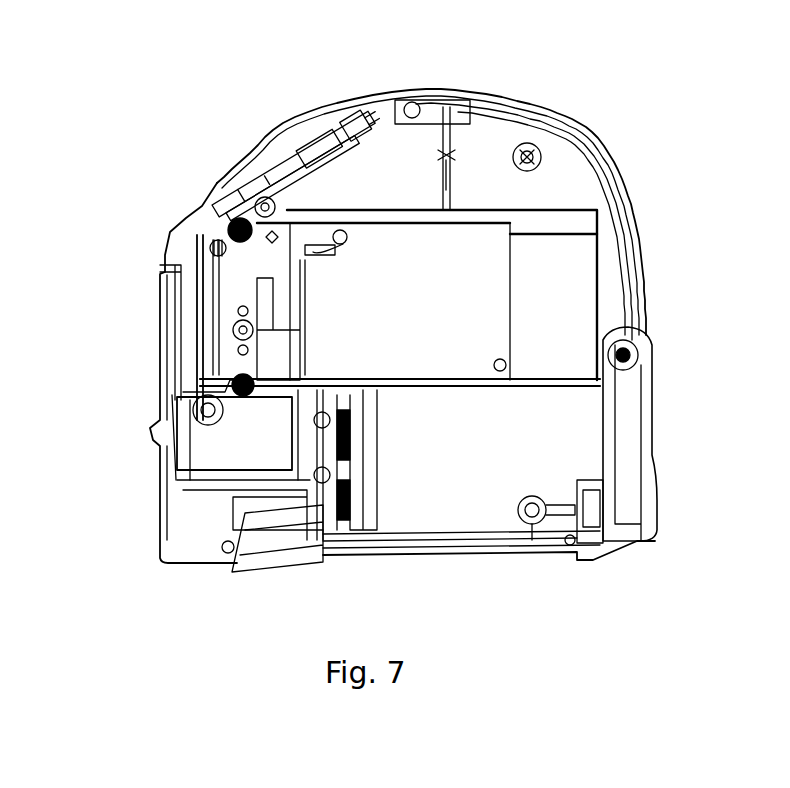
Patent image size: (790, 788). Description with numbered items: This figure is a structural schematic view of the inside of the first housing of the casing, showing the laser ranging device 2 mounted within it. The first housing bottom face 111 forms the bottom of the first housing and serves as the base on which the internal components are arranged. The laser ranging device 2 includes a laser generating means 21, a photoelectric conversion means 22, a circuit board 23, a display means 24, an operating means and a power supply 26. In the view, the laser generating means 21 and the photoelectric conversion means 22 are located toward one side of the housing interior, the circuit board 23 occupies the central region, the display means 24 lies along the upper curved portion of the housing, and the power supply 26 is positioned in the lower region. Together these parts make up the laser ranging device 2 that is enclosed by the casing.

The laser ranging device 2 is at (186, 74).
The first housing bottom face 111 is at (487, 160).
The display means 24 is at (243, 178).
The circuit board 23 is at (475, 257).
The photoelectric conversion means 22 is at (232, 277).
The laser generating means 21 is at (222, 360).
The power supply 26 is at (472, 488).